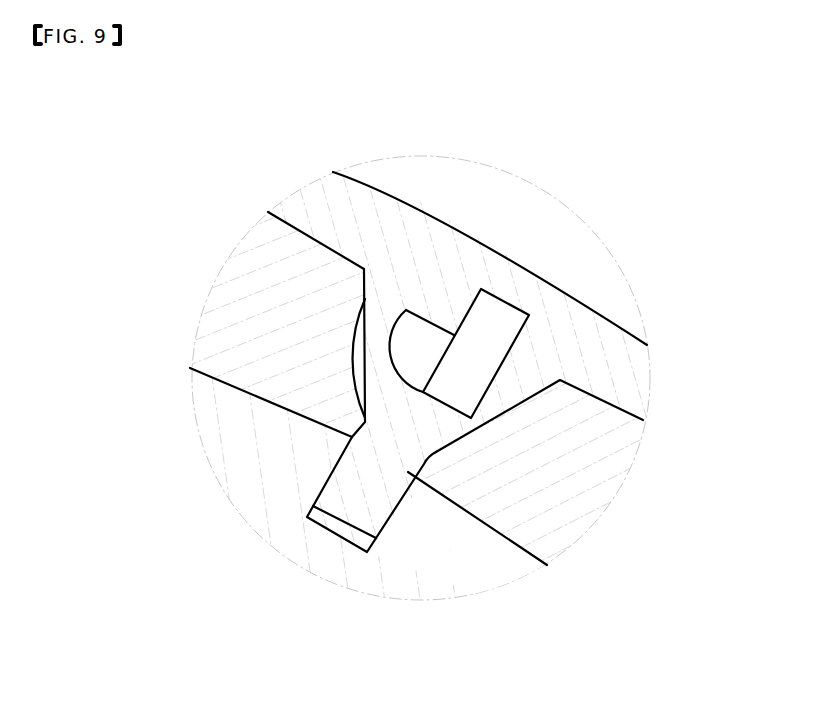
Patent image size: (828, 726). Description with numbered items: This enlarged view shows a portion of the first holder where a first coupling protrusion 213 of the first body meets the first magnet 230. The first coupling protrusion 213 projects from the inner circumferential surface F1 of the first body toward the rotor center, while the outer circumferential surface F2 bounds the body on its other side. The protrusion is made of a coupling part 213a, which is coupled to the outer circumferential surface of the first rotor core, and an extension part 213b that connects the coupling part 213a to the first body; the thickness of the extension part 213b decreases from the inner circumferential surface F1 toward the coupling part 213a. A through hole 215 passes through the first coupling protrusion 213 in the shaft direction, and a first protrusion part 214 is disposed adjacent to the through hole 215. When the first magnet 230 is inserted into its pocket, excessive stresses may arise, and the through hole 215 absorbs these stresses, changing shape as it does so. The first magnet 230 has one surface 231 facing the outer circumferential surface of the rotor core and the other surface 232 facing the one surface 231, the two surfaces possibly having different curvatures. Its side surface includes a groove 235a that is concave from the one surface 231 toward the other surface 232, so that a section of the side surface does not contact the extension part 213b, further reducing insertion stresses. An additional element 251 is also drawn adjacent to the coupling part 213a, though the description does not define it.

The first coupling protrusion 213 is at (507, 368).
The coupling part 213a is at (383, 500).
The extension part 213b is at (500, 392).
The first protrusion part 214 is at (493, 314).
The through hole 215 is at (421, 338).
The first magnet 230 is at (236, 301).
The one surface 231 is at (207, 370).
The other surface 232 is at (297, 223).
The groove 235a is at (350, 350).
The elastic member 251 is at (316, 500).
The inner circumferential surface F1 is at (629, 422).
The outer circumferential surface F2 is at (621, 323).